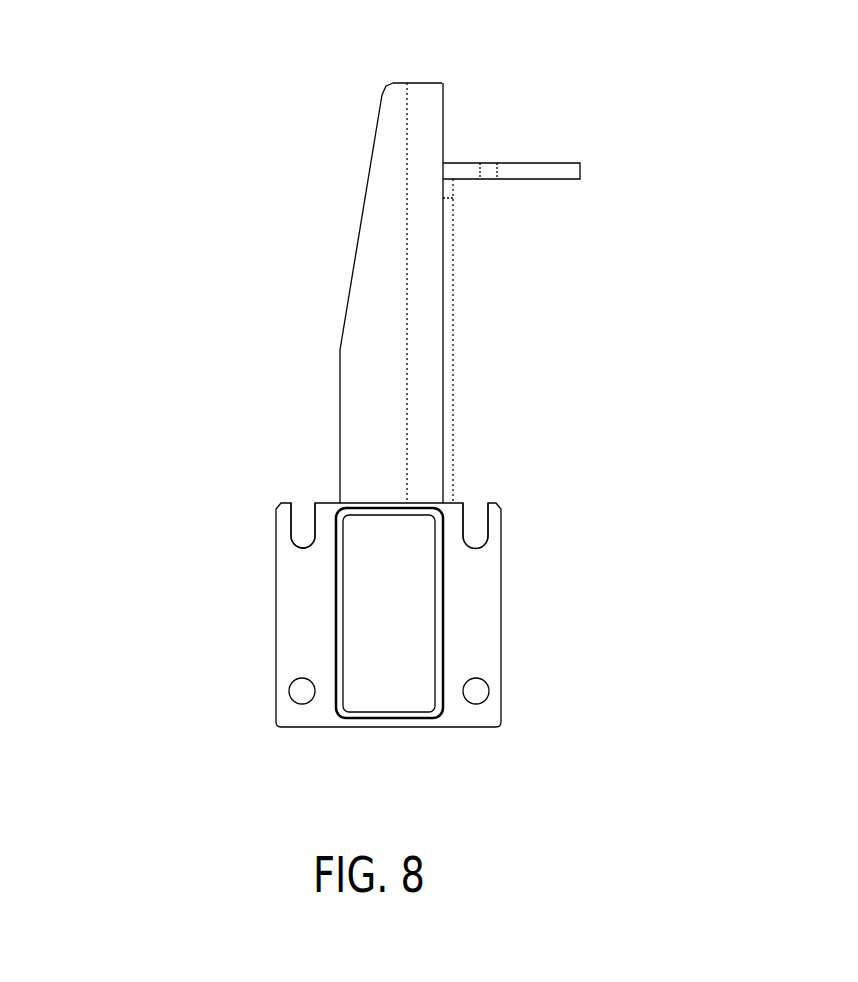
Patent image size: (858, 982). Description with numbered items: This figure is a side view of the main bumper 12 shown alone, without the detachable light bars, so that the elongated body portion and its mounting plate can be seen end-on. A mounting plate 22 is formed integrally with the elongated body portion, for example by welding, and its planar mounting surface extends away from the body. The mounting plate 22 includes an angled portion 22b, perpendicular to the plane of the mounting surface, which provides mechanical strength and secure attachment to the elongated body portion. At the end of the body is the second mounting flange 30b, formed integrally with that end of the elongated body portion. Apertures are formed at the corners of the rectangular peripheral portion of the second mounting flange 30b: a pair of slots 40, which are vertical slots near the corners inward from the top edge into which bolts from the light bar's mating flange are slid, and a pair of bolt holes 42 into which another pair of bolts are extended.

The main bumper 12 is at (710, 276).
The mounting plate 22 is at (453, 332).
The angled portion 22b is at (362, 215).
The second mounting flange 30b is at (497, 612).
The slots 40 is at (290, 503).
The bolt holes 42 is at (299, 700).